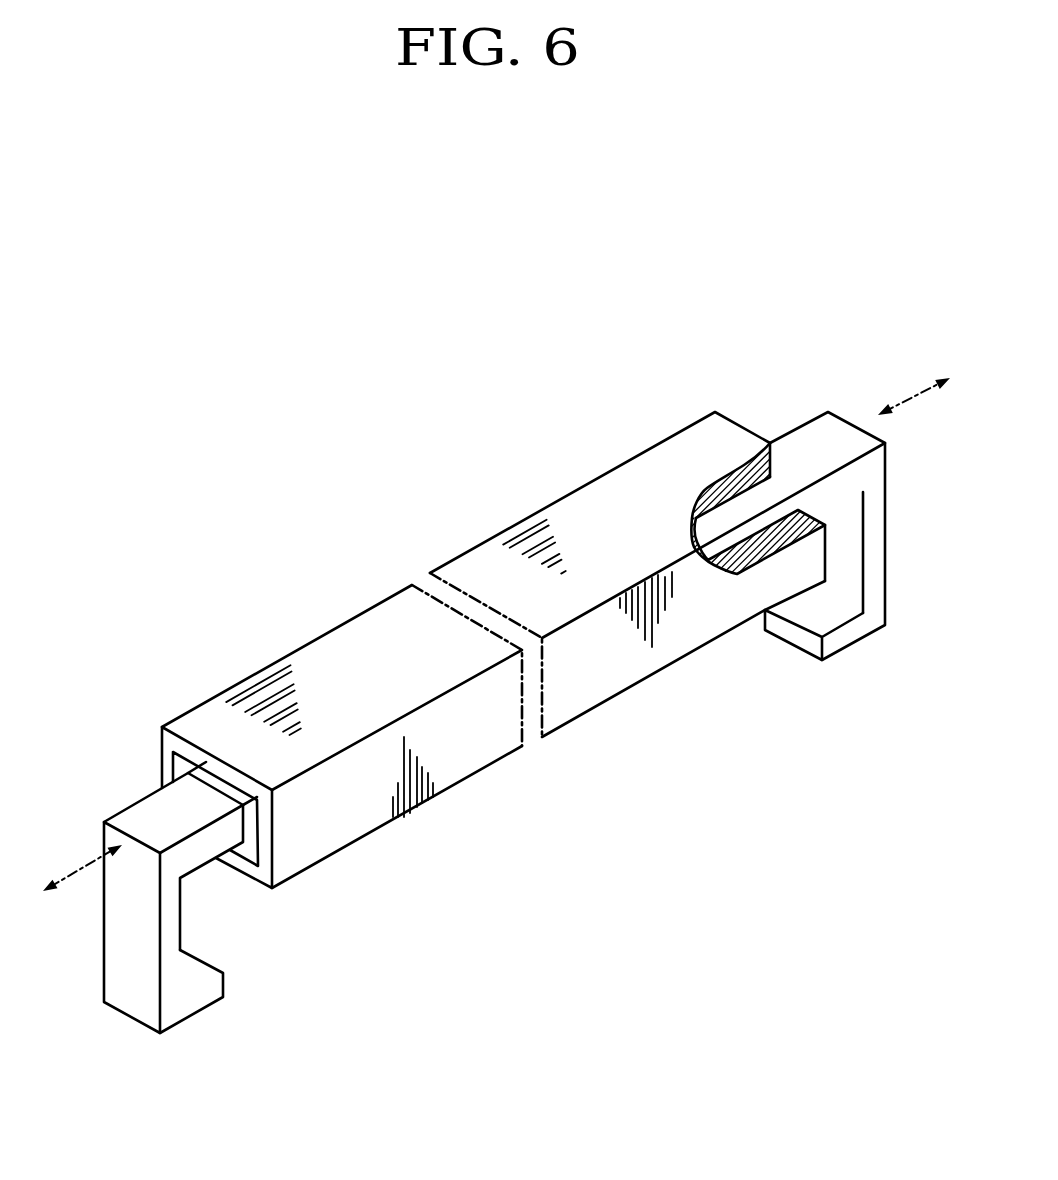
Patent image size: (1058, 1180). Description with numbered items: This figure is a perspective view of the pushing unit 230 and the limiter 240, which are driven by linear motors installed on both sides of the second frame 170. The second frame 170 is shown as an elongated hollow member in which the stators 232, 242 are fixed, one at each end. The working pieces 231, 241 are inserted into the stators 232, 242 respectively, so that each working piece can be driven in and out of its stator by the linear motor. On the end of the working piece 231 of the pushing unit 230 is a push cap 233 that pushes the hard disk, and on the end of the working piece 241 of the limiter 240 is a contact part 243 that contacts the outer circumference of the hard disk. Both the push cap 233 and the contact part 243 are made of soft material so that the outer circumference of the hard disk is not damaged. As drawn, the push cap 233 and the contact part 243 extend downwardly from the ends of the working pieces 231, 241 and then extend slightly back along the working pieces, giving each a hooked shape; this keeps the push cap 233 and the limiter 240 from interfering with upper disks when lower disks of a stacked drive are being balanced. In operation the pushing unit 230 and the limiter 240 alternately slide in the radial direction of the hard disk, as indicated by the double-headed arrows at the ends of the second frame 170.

The second frame 170 is at (523, 663).
The pushing unit 230 is at (221, 897).
The working piece 231 is at (203, 852).
The stator 232 is at (250, 823).
The push cap 233 is at (239, 991).
The limiter 240 is at (835, 577).
The working piece 241 is at (828, 497).
The stator 242 is at (750, 575).
The contact part 243 is at (863, 720).